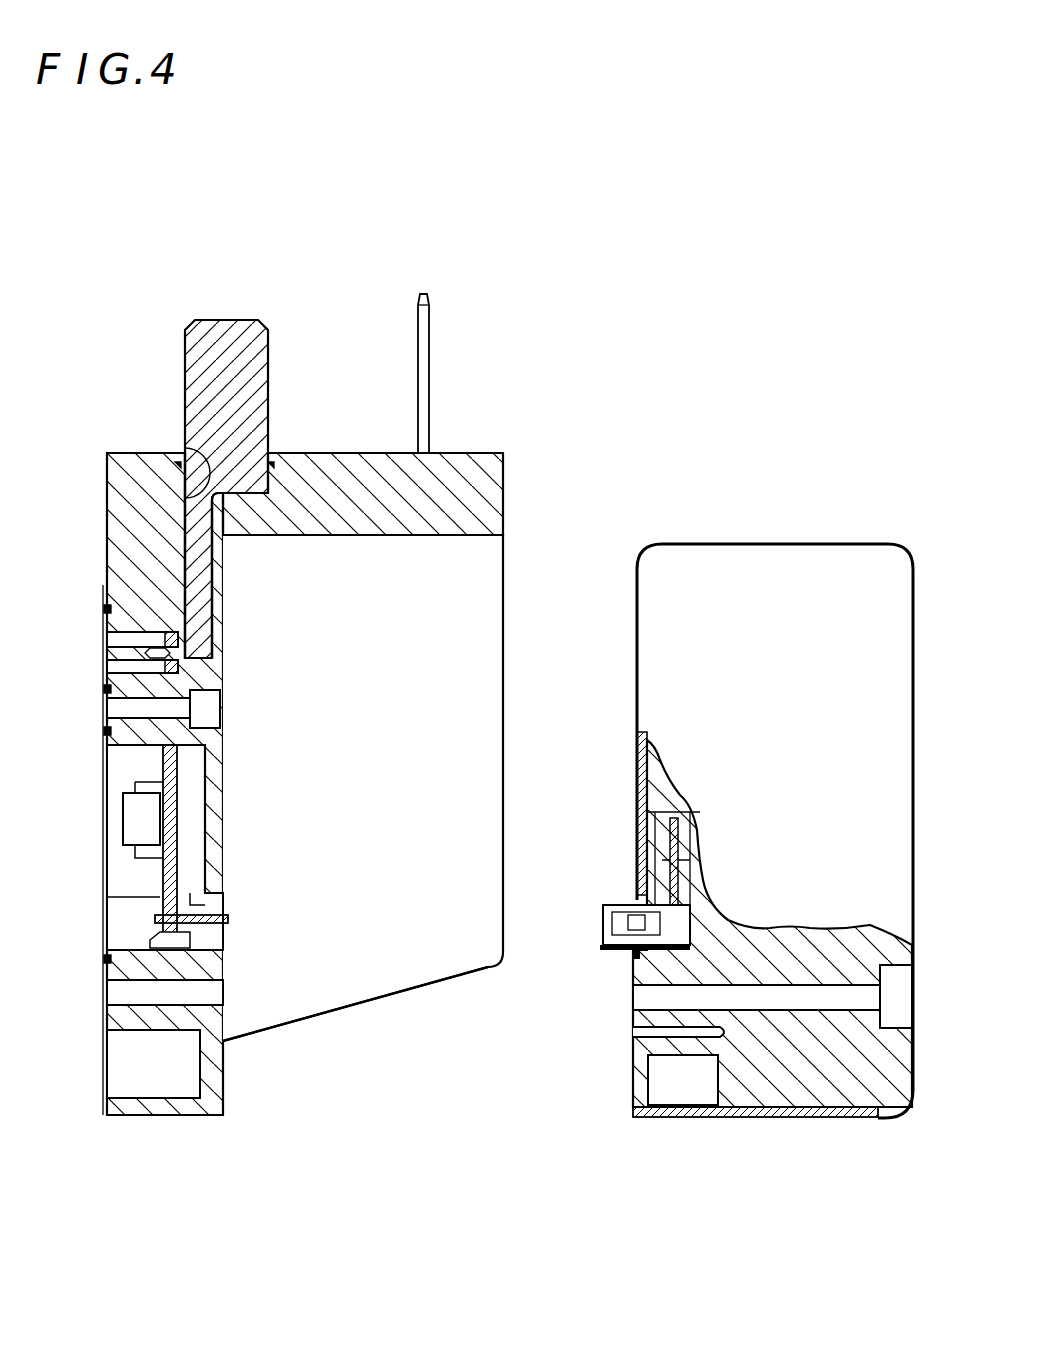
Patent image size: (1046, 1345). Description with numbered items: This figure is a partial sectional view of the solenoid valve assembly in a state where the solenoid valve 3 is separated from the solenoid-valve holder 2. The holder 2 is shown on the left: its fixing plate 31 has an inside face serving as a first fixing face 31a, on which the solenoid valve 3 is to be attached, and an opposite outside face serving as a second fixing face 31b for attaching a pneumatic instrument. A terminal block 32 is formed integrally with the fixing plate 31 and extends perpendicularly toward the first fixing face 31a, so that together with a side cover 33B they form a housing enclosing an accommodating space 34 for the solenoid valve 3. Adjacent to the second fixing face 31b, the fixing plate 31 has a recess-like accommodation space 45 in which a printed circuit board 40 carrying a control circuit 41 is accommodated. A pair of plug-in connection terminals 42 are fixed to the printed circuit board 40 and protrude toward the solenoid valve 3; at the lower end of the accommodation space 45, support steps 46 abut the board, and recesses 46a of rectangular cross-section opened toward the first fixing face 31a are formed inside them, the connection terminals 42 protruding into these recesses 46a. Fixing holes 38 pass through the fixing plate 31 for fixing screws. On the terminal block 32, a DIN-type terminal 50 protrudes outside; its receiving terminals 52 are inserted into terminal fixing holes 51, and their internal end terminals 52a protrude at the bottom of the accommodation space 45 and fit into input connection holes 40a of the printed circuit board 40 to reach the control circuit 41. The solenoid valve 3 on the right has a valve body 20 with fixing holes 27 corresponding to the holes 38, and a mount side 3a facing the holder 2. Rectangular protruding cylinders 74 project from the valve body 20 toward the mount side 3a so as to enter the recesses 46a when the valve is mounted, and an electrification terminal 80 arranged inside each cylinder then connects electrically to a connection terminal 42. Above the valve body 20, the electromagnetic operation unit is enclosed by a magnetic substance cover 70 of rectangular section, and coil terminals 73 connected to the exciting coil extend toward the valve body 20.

The solenoid-valve holder 2 is at (298, 683).
The solenoid valve 3 is at (732, 801).
The mount side 3a is at (645, 1108).
The valve body 20 is at (905, 1105).
The fixing holes 27 is at (655, 995).
The fixing plate 31 is at (113, 488).
The first fixing face 31a is at (224, 1012).
The second fixing face 31b is at (108, 963).
The terminal block 32 is at (462, 462).
The side cover 33B is at (404, 985).
The accommodating space 34 is at (372, 717).
The fixing holes 38 is at (112, 998).
The printed circuit board 40 is at (163, 765).
The input connection holes 40a is at (165, 665).
The control circuit 41 is at (125, 830).
The plug-in connection terminals 42 is at (230, 918).
The accommodation space 45 is at (135, 630).
The support steps 46 is at (185, 882).
The recesses 46a is at (225, 945).
The DIN-type terminal 50 is at (450, 322).
The terminal fixing holes 51 is at (200, 465).
The receiving terminals 52 is at (262, 350).
The internal end terminals 52a is at (150, 648).
The magnetic substance cover 70 is at (838, 547).
The coil terminals 73 is at (658, 822).
The protruding cylinders 74 is at (612, 910).
The electrification terminal 80 is at (620, 925).